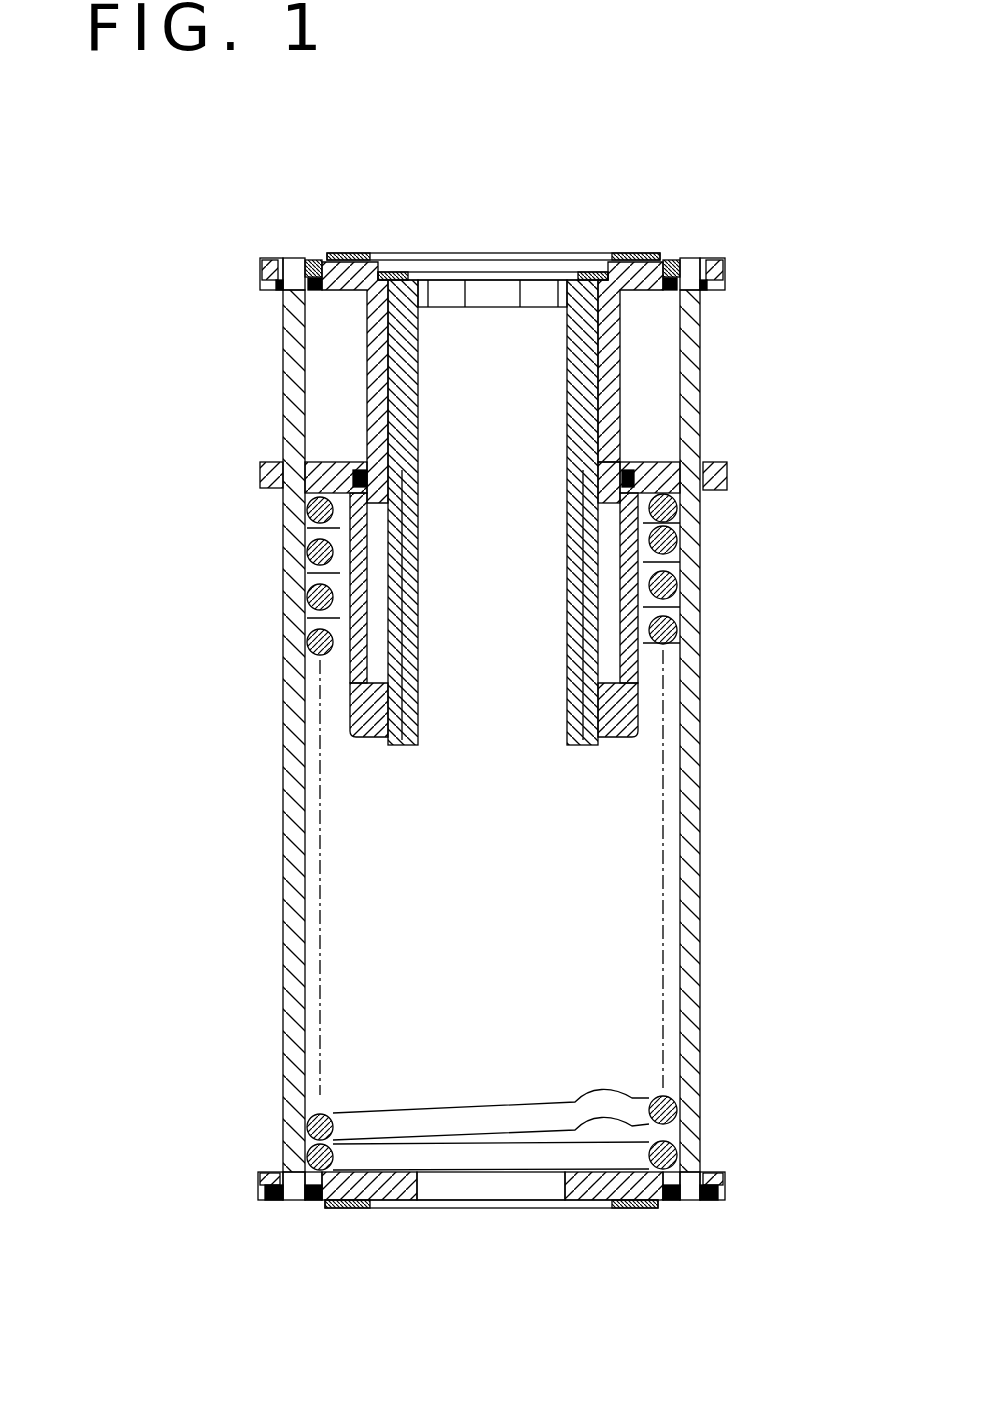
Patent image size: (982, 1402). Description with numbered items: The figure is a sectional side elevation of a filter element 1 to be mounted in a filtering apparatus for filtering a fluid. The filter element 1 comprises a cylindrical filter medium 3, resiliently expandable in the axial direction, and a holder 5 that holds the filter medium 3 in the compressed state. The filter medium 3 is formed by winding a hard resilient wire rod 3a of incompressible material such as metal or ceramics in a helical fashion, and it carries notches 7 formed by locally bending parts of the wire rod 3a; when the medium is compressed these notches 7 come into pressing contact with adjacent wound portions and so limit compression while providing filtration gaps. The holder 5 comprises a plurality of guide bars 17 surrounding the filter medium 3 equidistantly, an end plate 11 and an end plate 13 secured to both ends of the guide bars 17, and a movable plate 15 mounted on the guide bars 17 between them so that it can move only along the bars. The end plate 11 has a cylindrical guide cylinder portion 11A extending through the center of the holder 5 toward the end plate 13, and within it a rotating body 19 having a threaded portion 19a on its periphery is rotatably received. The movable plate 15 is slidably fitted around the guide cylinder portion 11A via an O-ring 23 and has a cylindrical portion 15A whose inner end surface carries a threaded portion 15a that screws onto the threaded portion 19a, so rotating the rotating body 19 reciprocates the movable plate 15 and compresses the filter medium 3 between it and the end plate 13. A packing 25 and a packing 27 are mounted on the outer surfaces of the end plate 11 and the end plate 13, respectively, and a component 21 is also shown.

The filter element 1 is at (680, 150).
The filter medium 3 is at (680, 603).
The resilient wire rod 3a is at (680, 641).
The holder 5 is at (730, 270).
The notches 7 is at (612, 1092).
The end plate 11 is at (640, 248).
The guide cylinder portion 11A is at (613, 376).
The end plate 13 is at (574, 1209).
The movable plate 15 is at (732, 472).
The cylindrical portion 15A is at (357, 530).
The threaded portion 15a is at (360, 710).
The guide bars 17 is at (290, 617).
The rotating body 19 is at (563, 281).
The threaded portion 19a is at (590, 572).
The body 21 is at (397, 272).
The O-ring 23 is at (352, 470).
The packing 25 is at (345, 254).
The packing 27 is at (347, 1210).